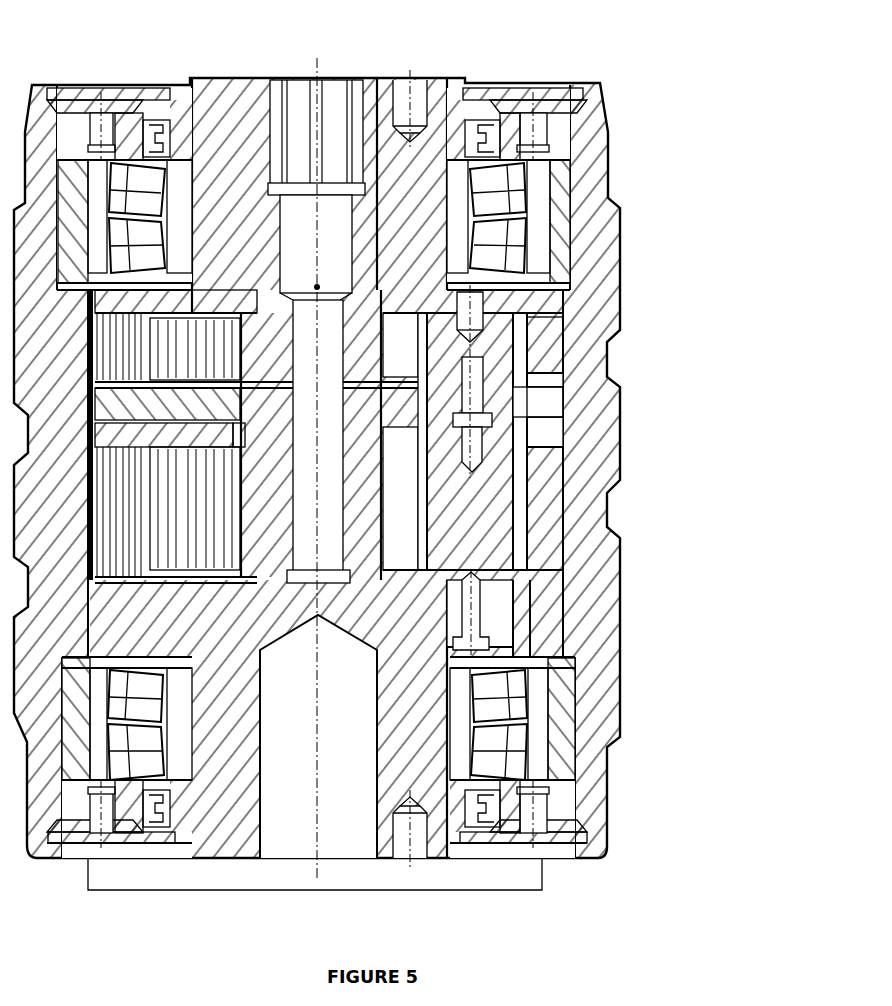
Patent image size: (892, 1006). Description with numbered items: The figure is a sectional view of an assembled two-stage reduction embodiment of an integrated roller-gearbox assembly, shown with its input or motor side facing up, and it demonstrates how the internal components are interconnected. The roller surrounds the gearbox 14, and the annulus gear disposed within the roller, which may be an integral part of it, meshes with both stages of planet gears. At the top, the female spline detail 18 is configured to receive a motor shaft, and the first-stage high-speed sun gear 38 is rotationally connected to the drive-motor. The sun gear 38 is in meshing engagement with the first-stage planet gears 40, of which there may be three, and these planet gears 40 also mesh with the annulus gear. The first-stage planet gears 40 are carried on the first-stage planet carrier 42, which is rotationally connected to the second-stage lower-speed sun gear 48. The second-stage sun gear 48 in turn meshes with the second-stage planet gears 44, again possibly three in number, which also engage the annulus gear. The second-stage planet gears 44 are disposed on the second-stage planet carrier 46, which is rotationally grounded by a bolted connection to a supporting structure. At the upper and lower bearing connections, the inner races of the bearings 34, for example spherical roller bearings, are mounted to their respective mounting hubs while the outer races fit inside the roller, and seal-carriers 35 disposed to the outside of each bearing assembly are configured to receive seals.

The gearbox 14 is at (313, 890).
The female spline detail 18 is at (338, 120).
The bearings 34 is at (533, 190).
The seal-carriers 35 is at (583, 122).
The first-stage sun gear 38 is at (360, 240).
The first-stage planet gears 40 is at (540, 335).
The first-stage planet carrier 42 is at (532, 400).
The second-stage planet gears 44 is at (535, 483).
The second-stage planet carrier 46 is at (528, 612).
The second-stage sun gear 48 is at (357, 487).